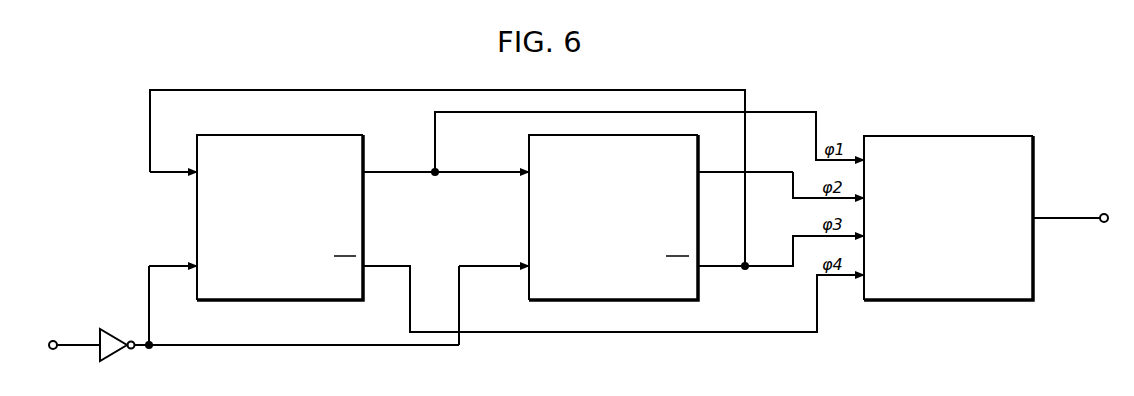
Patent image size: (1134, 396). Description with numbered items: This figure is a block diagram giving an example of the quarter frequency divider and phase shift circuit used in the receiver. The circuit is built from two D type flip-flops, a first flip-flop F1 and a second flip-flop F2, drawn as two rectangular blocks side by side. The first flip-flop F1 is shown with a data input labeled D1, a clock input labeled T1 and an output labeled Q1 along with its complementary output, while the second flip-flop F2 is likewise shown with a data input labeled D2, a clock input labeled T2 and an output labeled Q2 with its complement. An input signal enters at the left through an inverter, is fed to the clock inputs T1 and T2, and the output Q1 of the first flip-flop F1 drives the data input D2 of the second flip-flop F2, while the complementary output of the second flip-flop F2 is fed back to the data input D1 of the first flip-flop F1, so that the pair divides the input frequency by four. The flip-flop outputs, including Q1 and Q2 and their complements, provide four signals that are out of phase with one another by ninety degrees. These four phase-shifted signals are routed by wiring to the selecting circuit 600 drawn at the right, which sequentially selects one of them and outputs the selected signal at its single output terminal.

The selecting circuit 600 is at (930, 136).
The D type flip-flop F1 is at (292, 217).
The D type flip-flop F2 is at (614, 217).
The data input of first flip-flop D1 is at (187, 172).
The clock input of first flip-flop T1 is at (185, 266).
The output of first flip-flop Q1 is at (384, 172).
The data input of second flip-flop D2 is at (496, 172).
The clock input of second flip-flop T2 is at (507, 266).
The output of second flip-flop Q2 is at (729, 172).